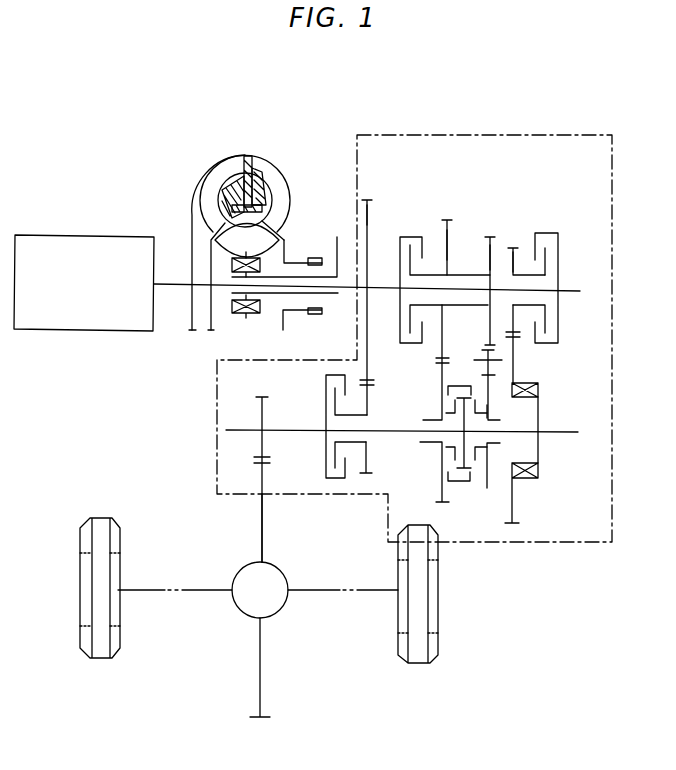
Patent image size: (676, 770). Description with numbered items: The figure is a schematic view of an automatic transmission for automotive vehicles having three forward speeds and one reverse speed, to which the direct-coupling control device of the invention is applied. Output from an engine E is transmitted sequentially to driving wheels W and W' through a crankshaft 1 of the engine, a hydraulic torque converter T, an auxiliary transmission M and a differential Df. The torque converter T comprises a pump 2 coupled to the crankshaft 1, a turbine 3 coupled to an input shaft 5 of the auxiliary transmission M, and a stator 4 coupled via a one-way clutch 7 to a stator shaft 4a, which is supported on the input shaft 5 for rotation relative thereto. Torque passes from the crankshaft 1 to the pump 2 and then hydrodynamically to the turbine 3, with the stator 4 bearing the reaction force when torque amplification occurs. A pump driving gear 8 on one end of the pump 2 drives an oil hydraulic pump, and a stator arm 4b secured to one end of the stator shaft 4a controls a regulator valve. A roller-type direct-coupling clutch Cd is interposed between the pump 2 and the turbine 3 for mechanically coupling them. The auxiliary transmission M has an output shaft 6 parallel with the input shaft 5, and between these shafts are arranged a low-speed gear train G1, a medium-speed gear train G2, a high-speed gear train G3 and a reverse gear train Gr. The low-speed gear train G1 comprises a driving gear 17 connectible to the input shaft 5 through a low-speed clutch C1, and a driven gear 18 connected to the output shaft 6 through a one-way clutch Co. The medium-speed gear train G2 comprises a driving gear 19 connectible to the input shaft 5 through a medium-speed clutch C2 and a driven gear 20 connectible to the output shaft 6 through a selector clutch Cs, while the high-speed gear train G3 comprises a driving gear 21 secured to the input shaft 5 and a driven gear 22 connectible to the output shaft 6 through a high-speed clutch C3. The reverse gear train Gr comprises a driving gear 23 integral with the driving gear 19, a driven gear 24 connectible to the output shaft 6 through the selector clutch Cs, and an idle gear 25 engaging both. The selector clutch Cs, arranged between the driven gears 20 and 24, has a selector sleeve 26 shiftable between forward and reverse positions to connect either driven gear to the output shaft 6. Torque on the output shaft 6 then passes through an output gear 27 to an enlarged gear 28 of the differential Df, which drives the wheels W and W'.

The engine E is at (88, 303).
The crankshaft 1 is at (172, 288).
The hydraulic torque converter T is at (257, 217).
The pump 2 is at (288, 198).
The turbine 3 is at (218, 177).
The direct-coupling clutch Cd is at (262, 167).
The stator 4 is at (268, 243).
The stator shaft 4a is at (326, 296).
The stator arm 4b is at (336, 250).
The input shaft 5 is at (283, 294).
The one-way clutch 7 is at (232, 263).
The pump driving gear 8 is at (315, 258).
The auxiliary transmission M is at (478, 135).
The output shaft 6 is at (228, 431).
The high-speed gear train G3 is at (376, 194).
The driving gear 21 is at (369, 228).
The medium-speed clutch C2 is at (408, 237).
The medium-speed gear train G2 is at (452, 214).
The driving gear 19 is at (447, 240).
The reverse gear train Gr is at (496, 230).
The driving gear 23 is at (492, 250).
The low-speed gear train G1 is at (519, 243).
The driving gear 17 is at (518, 259).
The low-speed clutch C1 is at (558, 254).
The idle gear 25 is at (486, 358).
The driven gear 18 is at (514, 365).
The one-way clutch Co is at (535, 473).
The driven gear 20 is at (442, 378).
The selector clutch Cs is at (473, 495).
The driven gear 24 is at (489, 407).
The selector sleeve 26 is at (457, 483).
The high-speed clutch C3 is at (324, 457).
The driven gear 22 is at (367, 470).
The output gear 27 is at (262, 411).
The enlarged gear 28 is at (263, 525).
The differential Df is at (270, 568).
The driving wheel W is at (100, 616).
The driving wheel W' is at (418, 621).